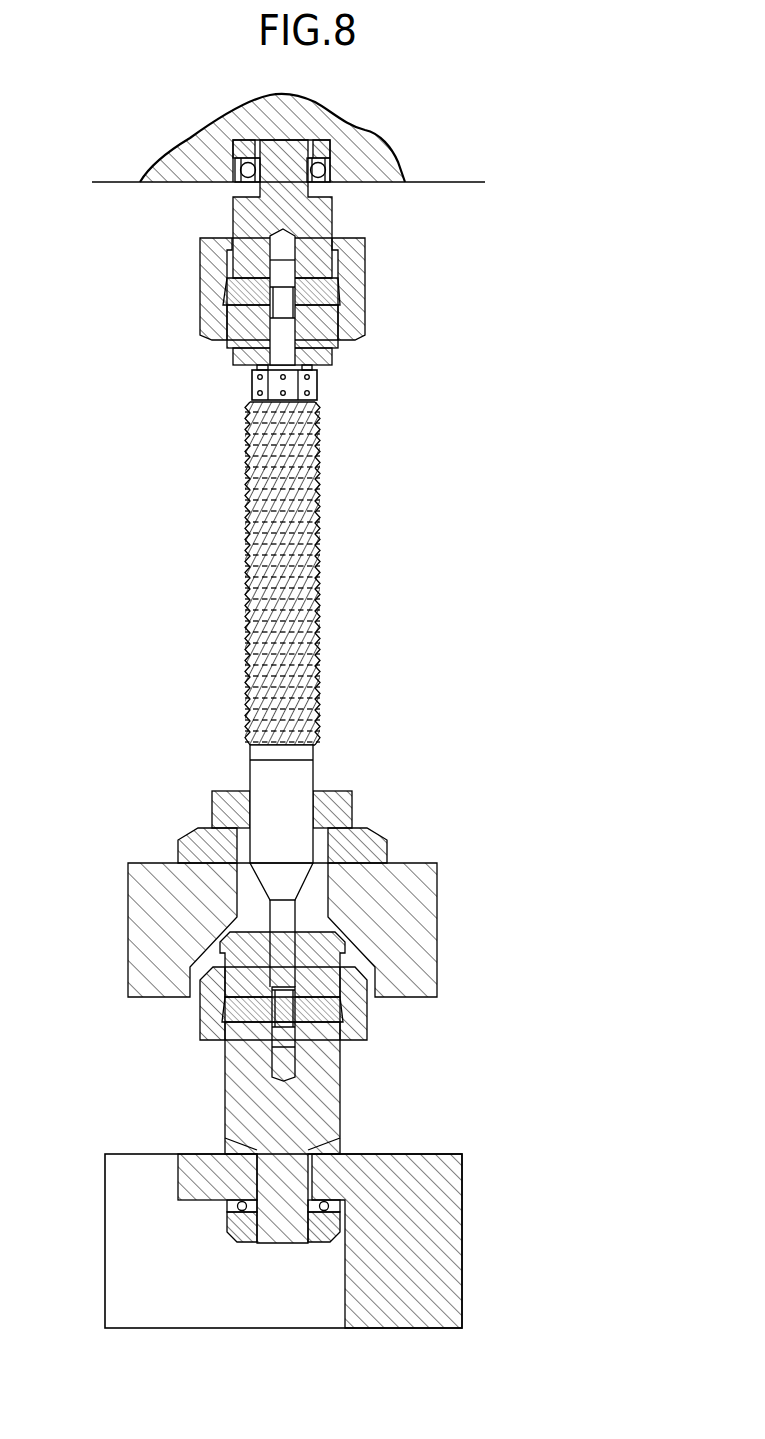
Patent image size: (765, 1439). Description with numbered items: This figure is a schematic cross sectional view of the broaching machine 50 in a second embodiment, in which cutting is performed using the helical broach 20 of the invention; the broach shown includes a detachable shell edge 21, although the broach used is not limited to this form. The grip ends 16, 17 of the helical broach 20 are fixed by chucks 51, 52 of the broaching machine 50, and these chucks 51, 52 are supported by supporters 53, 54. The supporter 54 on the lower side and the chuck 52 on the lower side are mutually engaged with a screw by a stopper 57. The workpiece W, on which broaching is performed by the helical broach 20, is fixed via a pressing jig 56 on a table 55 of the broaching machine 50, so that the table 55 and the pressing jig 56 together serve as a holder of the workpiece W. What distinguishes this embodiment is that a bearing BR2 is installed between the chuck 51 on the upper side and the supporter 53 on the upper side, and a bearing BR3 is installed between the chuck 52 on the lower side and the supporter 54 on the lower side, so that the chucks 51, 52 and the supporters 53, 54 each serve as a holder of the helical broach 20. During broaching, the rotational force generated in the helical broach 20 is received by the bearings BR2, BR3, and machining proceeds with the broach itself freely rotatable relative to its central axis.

The broaching machine 50 is at (530, 152).
The supporter 53 is at (212, 137).
The bearing BR2 is at (330, 190).
The chuck 51 is at (200, 272).
The grip end 16 is at (283, 353).
The shell edge 21 is at (322, 438).
The helical broach 20 is at (320, 565).
The workpiece W is at (352, 791).
The pressing jig 56 is at (375, 830).
The table 55 is at (438, 897).
The grip end 17 is at (285, 958).
The chuck 52 is at (200, 1027).
The supporter 54 is at (127, 1232).
The bearing BR3 is at (330, 1205).
The stopper 57 is at (330, 1217).